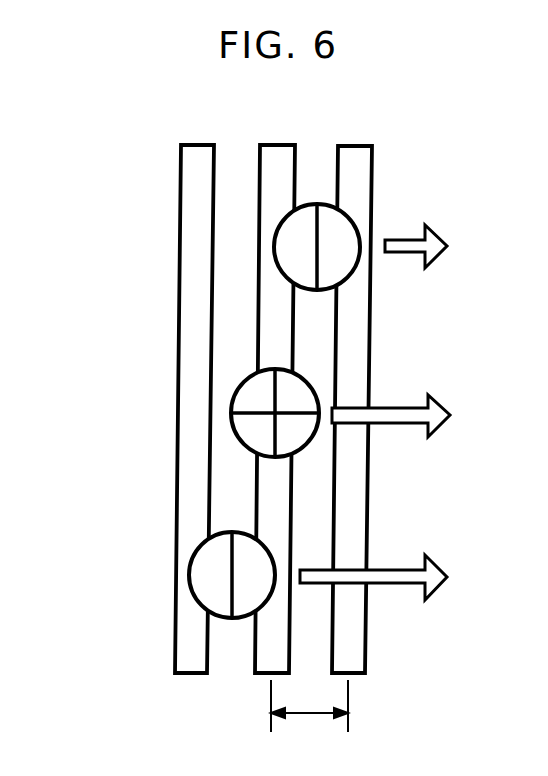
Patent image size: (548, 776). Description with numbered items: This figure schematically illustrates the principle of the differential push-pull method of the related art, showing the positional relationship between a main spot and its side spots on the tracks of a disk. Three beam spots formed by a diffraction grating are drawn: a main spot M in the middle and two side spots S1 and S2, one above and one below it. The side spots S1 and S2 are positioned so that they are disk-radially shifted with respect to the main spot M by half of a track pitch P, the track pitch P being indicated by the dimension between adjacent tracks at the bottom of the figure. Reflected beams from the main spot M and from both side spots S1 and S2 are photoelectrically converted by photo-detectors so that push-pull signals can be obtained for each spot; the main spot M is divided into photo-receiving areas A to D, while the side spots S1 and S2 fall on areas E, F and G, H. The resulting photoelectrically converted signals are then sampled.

The side spot S1 is at (276, 258).
The main spot M is at (232, 413).
The side spot S2 is at (190, 573).
The track pitch P is at (309, 710).